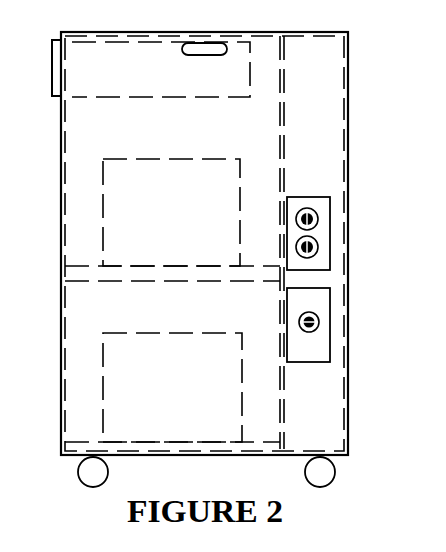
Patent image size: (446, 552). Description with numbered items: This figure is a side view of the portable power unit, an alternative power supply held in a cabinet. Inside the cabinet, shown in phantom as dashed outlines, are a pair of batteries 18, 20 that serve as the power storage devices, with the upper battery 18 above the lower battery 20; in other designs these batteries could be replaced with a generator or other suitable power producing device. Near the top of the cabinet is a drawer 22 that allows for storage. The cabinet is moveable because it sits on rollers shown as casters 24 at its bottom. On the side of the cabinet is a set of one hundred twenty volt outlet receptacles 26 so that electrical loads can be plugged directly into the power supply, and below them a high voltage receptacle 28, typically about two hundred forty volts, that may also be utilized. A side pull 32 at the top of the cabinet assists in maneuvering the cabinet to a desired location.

The battery 18 is at (171, 212).
The battery 20 is at (172, 387).
The drawer 22 is at (161, 69).
The casters 24 is at (305, 473).
The 120 volt outlet receptacles 26 is at (318, 197).
The high voltage receptacle 28 is at (328, 362).
The side pull 32 is at (210, 50).